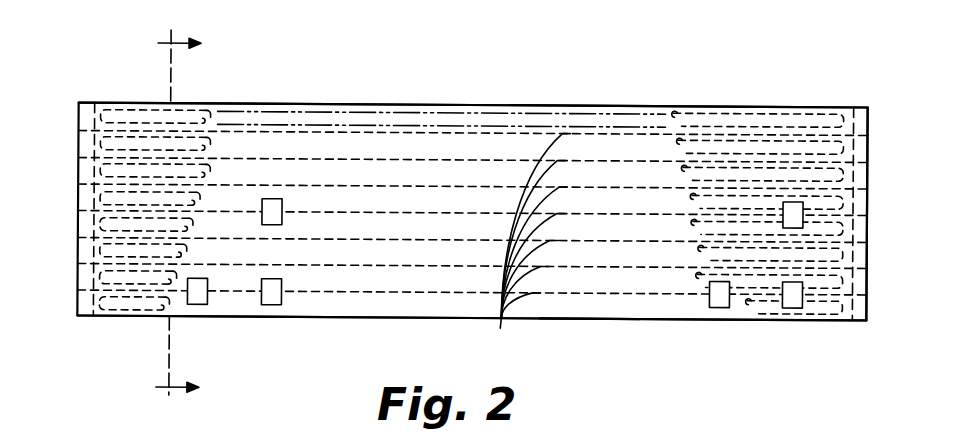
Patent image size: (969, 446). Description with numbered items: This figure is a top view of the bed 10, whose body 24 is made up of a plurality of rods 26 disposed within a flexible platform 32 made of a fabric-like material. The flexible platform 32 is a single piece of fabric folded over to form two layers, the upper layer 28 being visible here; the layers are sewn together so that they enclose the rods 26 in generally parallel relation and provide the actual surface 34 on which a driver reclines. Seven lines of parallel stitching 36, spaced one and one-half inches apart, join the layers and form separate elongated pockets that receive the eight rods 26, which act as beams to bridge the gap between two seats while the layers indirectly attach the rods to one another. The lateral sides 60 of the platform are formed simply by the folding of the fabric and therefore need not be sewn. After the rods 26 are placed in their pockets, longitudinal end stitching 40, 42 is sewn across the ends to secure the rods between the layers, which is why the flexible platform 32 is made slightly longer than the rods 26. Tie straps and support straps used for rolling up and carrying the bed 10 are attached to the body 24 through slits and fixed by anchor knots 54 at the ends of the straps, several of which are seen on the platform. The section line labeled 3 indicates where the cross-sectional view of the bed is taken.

The section line 3- 3 is at (187, 215).
The bed 10 is at (570, 87).
The body 24 is at (657, 107).
The rods 26 is at (124, 114).
The layer 28 is at (650, 310).
The flexible platform 32 is at (867, 202).
The surface 34 is at (350, 106).
The parallel stitching 36 is at (528, 250).
The longitudinal end stitching 40 is at (853, 177).
The longitudinal end stitching 42 is at (93, 172).
The anchor knots 54 is at (198, 293).
The lateral sides 60 is at (436, 113).